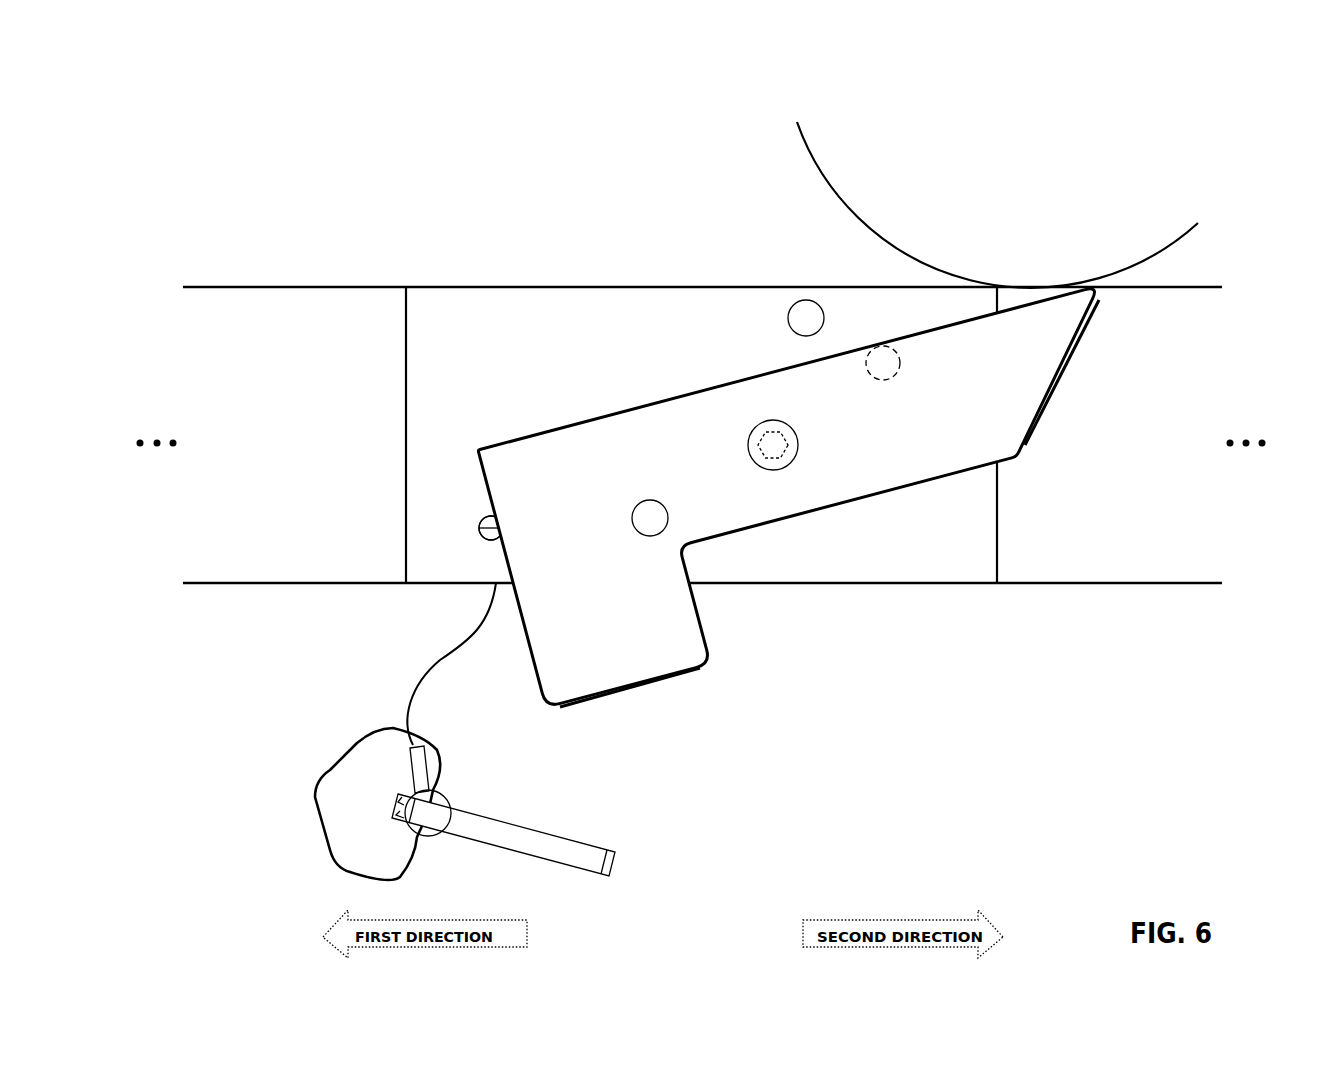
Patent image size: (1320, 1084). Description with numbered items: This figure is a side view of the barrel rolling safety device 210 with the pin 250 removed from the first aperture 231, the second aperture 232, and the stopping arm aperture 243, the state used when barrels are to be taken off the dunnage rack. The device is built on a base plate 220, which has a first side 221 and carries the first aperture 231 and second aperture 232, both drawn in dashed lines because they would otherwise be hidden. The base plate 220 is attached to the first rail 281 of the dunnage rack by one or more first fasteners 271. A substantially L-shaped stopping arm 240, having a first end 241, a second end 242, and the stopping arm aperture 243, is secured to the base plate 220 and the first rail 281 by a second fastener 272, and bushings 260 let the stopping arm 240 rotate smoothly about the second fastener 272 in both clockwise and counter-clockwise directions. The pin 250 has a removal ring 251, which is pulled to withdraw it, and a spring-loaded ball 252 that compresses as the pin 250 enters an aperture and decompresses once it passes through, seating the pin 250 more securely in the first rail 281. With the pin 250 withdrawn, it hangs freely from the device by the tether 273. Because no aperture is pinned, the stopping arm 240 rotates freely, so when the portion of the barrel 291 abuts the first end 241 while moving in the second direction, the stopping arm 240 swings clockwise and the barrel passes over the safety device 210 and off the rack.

The barrel rolling safety device 210 is at (405, 58).
The base plate 220 is at (975, 585).
The first side 221 is at (468, 543).
The first aperture 231 is at (902, 356).
The second aperture 232 is at (809, 337).
The stopping arm 240 is at (665, 353).
The first end 241 is at (1068, 368).
The second end 242 is at (653, 690).
The stopping arm aperture 243 is at (655, 538).
The pin 250 is at (600, 842).
The removal ring 251 is at (328, 770).
The spring-loaded ball 252 is at (618, 868).
The bushings 260 is at (775, 470).
The first fasteners 271 is at (483, 518).
The second fastener 272 is at (792, 467).
The tether 273 is at (477, 633).
The first rail 281 is at (352, 585).
The portion of the barrel 291 is at (1170, 243).